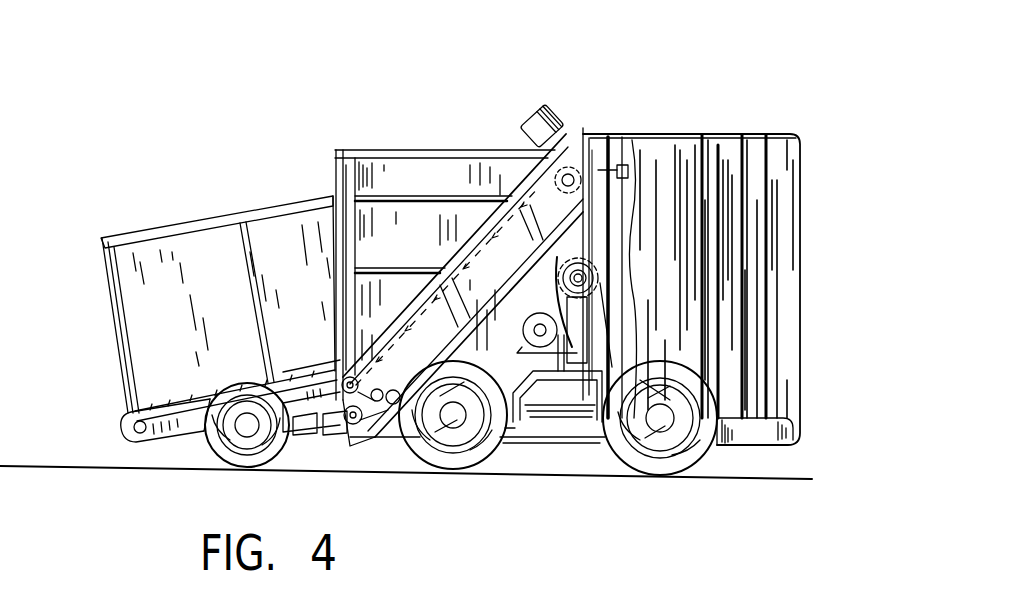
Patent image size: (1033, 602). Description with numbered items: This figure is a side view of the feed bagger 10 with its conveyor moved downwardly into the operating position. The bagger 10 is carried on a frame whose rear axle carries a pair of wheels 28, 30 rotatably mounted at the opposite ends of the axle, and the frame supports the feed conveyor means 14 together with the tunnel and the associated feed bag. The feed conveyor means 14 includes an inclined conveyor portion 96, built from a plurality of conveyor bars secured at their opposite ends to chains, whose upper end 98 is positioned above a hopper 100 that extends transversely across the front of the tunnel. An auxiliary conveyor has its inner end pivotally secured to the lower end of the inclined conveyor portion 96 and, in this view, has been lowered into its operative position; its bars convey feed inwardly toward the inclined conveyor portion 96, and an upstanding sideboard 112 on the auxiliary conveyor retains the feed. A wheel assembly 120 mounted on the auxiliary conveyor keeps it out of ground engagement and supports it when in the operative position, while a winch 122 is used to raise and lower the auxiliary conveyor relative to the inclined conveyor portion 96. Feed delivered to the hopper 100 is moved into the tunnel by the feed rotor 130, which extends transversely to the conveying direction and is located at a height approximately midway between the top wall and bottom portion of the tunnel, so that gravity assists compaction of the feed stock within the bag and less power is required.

The feed bagger 10 is at (436, 118).
The feed conveyor means 14 is at (110, 416).
The wheel 28 is at (688, 458).
The wheel 30 is at (428, 458).
The inclined conveyor portion 96 is at (526, 200).
The upper end of inclined conveyor 98 is at (571, 162).
The hopper 100 is at (625, 164).
The sideboard 112 is at (194, 279).
The wheel assembly 120 is at (298, 458).
The winch 122 is at (532, 115).
The feed rotor 130 is at (597, 262).